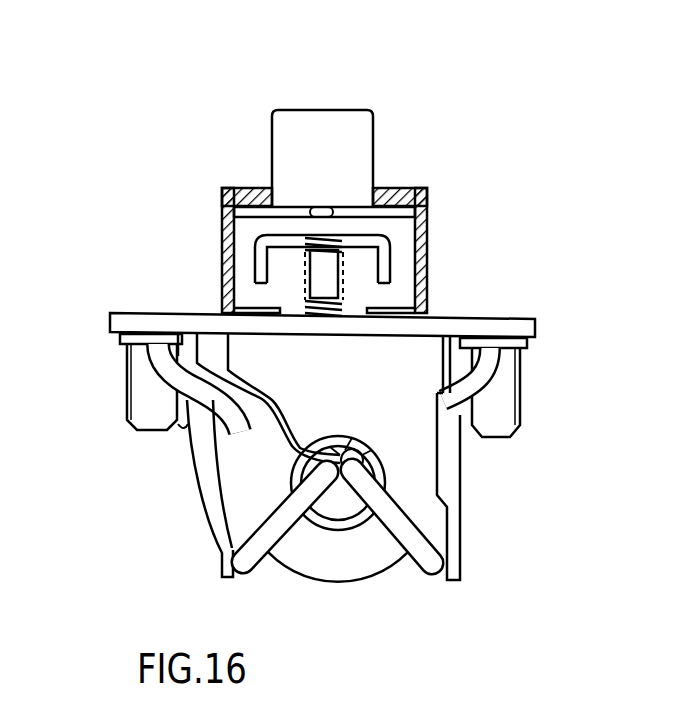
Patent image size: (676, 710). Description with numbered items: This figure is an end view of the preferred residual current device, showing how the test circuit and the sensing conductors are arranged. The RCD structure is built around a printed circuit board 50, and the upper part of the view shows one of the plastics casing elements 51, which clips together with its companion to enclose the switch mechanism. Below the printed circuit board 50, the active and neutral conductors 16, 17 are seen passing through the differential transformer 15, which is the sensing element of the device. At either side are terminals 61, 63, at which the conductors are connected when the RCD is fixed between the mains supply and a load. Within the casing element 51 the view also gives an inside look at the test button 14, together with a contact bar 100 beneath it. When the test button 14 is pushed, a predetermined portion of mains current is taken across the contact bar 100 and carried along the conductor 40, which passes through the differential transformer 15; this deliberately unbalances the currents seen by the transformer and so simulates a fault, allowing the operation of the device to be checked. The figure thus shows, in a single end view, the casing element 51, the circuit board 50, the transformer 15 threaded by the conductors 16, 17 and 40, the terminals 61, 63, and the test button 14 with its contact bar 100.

The test button 14 is at (297, 128).
The differential transformer 15 is at (332, 556).
The active conductor 16 is at (213, 510).
The neutral conductor 17 is at (423, 557).
The conductor 40 is at (280, 427).
The printed circuit board 50 is at (130, 318).
The plastics casing element 51 is at (222, 188).
The terminal 61 is at (147, 391).
The terminal 63 is at (493, 405).
The contact bar 100 is at (390, 237).